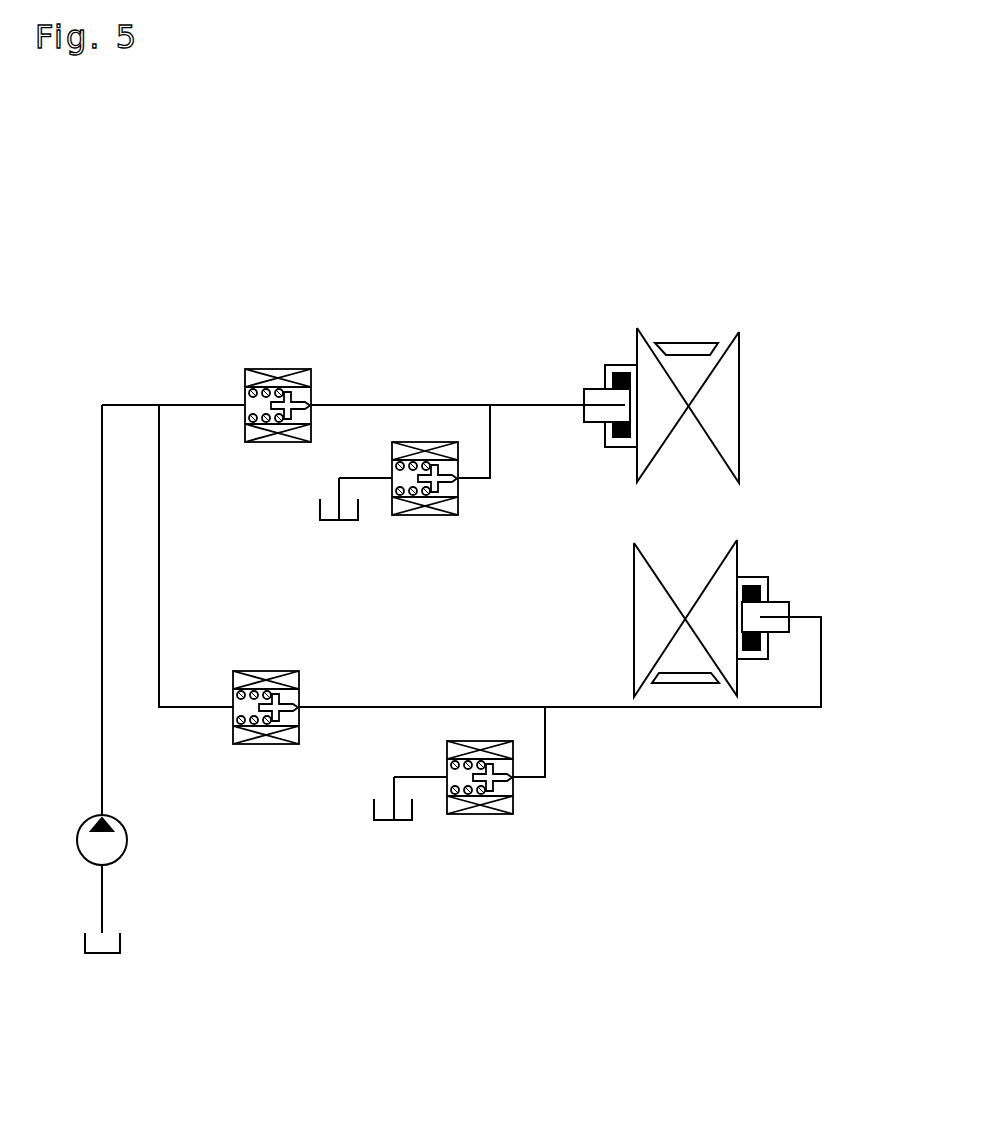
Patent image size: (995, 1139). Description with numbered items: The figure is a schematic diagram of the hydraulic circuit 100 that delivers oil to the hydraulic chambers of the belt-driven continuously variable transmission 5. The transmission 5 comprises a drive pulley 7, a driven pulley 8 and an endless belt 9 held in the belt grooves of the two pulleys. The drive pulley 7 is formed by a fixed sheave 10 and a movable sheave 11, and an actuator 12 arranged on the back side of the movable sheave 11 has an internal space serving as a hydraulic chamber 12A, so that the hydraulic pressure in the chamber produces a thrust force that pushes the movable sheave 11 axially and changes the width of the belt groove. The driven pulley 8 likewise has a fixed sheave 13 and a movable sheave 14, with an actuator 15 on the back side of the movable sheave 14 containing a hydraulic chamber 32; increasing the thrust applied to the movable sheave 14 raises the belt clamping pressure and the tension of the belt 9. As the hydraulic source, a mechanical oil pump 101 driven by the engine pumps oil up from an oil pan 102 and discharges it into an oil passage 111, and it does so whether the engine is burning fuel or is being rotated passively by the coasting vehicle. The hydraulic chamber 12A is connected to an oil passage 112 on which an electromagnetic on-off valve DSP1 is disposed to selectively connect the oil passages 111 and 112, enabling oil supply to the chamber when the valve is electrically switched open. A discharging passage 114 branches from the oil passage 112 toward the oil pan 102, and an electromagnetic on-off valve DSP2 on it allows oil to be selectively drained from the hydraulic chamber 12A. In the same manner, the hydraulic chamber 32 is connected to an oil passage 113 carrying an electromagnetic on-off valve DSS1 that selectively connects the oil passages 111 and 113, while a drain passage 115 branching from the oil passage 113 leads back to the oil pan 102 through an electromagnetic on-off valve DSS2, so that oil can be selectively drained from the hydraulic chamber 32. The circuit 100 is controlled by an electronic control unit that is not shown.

The hydraulic circuit 100 is at (455, 188).
The belt-driven continuously variable transmission 5 is at (834, 331).
The drive pulley 7 is at (764, 343).
The driven pulley 8 is at (750, 536).
The endless belt 9 is at (685, 343).
The fixed sheave 10 is at (734, 335).
The movable sheave 11 is at (632, 340).
The actuator 12 is at (612, 364).
The hydraulic chamber 12A is at (622, 440).
The fixed sheave 13 is at (655, 565).
The movable sheave 14 is at (741, 553).
The actuator 15 is at (770, 590).
The hydraulic chamber 32 is at (763, 640).
The mechanical oil pump 101 is at (127, 840).
The oil pan 102 is at (345, 522).
The oil passage 111 is at (200, 403).
The oil passage 112 is at (463, 403).
The oil passage 113 is at (413, 705).
The discharging passage 114 is at (338, 482).
The drain passage 115 is at (393, 786).
The electromagnetic on-off valve DSP1 is at (325, 392).
The electromagnetic on-off valve DSP2 is at (472, 500).
The electromagnetic on-off valve DSS1 is at (222, 727).
The electromagnetic on-off valve DSS2 is at (527, 804).